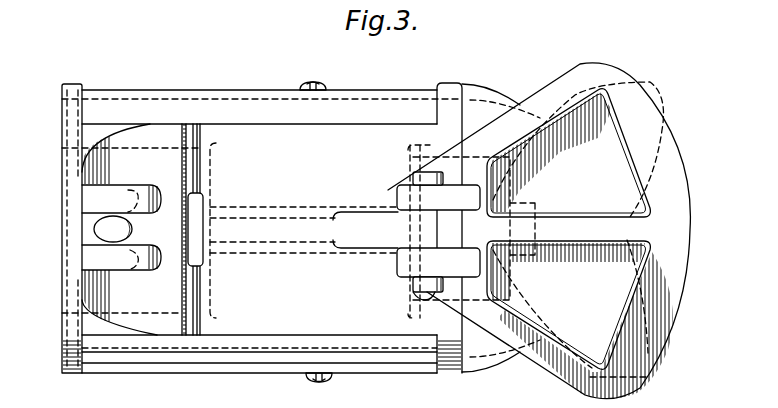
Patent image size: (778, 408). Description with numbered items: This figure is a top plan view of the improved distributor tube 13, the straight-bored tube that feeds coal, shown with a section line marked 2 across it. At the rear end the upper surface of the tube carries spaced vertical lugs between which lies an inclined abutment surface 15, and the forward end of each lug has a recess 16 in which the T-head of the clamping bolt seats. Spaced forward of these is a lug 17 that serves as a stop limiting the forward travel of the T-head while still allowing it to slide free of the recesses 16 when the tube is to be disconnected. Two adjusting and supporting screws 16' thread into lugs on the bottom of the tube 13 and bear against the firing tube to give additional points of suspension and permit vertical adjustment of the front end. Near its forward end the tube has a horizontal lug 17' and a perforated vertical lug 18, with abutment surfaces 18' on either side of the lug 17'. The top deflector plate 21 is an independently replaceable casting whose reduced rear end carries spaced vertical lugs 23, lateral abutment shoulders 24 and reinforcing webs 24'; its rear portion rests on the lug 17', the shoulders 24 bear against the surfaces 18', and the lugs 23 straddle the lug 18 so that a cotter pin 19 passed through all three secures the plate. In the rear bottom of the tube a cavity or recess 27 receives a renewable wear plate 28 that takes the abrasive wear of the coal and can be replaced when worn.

The section line 2- 2 is at (62, 229).
The distributor tube 13 is at (228, 108).
The inclined abutment surface 15 is at (147, 188).
The recess 16 is at (125, 230).
The adjusting and supporting screws 16' is at (333, 230).
The lug 17 is at (291, 229).
The forwardly extending projection or horizontal lug 17' is at (578, 229).
The vertically extending lug 18 is at (365, 248).
The abutment surfaces 18' is at (487, 233).
The cotter pin 19 is at (425, 293).
The top deflector plate 21 is at (665, 172).
The spaced vertical lugs 23 is at (397, 195).
The lateral abutment shoulders 24 is at (560, 242).
The strengthening and reinforcing webs 24' is at (459, 232).
The cavity or recess 27 is at (155, 317).
The renewable wear plate 28 is at (133, 317).